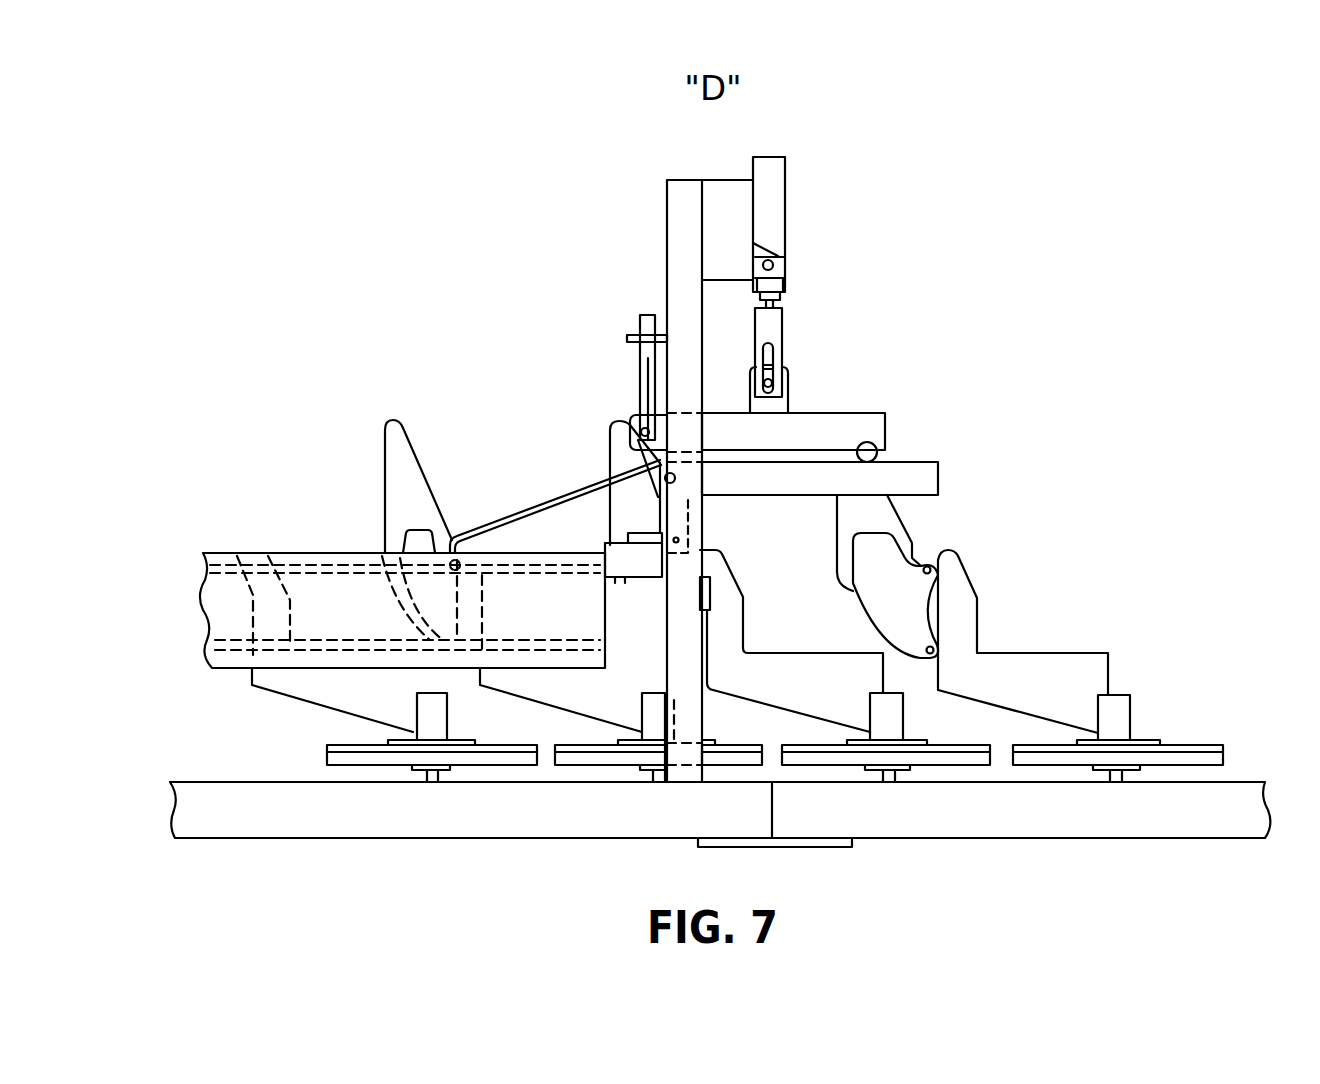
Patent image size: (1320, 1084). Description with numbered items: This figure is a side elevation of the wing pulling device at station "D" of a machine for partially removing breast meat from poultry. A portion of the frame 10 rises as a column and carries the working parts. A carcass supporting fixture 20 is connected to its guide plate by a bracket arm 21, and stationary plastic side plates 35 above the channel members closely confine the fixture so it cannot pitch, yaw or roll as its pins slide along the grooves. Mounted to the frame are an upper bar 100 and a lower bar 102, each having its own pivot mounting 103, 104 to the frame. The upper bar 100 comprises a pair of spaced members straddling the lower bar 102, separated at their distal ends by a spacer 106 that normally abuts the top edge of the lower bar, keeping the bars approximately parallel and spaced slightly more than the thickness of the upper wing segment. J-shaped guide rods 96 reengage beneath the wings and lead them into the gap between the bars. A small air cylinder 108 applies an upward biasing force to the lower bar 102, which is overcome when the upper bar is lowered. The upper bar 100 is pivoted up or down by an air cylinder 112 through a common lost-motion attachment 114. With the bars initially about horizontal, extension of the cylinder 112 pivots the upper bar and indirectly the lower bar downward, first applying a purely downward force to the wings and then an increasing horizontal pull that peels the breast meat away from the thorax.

The frame 10 is at (667, 222).
The air cylinder 112 is at (773, 216).
The lost-motion attachment 114 is at (783, 354).
The upper bar 100 is at (872, 425).
The spacer 106 is at (877, 453).
The lower bar 102 is at (933, 477).
The pivot mounting 104 is at (675, 481).
The pivot mounting 103 is at (638, 425).
The carcass supporting fixture 20 is at (405, 465).
The guide rods 96 is at (532, 500).
The air cylinder 108 is at (628, 530).
The side plates 35 is at (327, 587).
The bracket arm 21 is at (1028, 657).